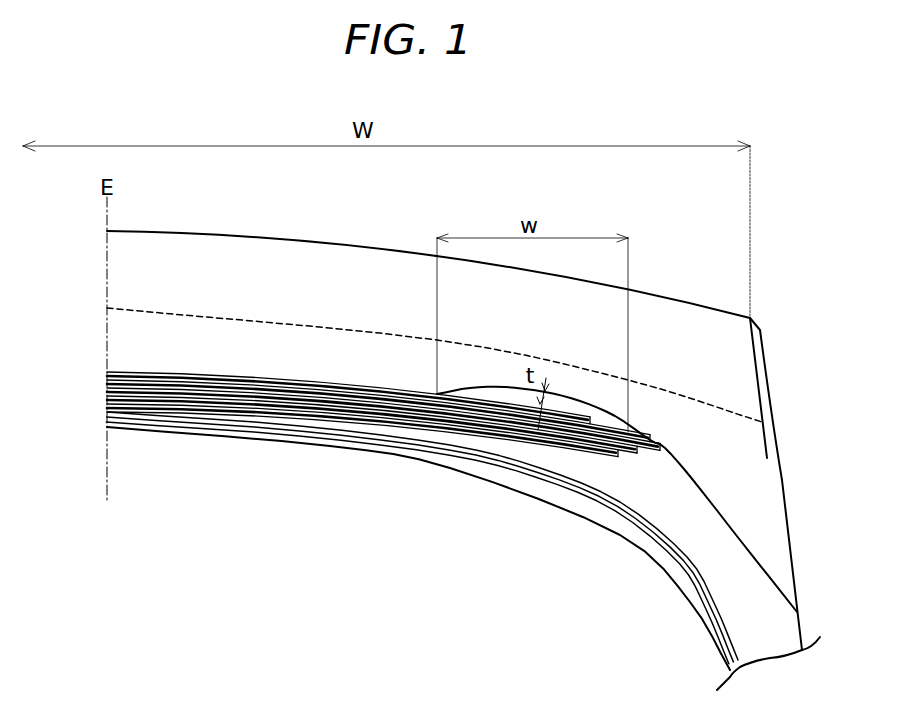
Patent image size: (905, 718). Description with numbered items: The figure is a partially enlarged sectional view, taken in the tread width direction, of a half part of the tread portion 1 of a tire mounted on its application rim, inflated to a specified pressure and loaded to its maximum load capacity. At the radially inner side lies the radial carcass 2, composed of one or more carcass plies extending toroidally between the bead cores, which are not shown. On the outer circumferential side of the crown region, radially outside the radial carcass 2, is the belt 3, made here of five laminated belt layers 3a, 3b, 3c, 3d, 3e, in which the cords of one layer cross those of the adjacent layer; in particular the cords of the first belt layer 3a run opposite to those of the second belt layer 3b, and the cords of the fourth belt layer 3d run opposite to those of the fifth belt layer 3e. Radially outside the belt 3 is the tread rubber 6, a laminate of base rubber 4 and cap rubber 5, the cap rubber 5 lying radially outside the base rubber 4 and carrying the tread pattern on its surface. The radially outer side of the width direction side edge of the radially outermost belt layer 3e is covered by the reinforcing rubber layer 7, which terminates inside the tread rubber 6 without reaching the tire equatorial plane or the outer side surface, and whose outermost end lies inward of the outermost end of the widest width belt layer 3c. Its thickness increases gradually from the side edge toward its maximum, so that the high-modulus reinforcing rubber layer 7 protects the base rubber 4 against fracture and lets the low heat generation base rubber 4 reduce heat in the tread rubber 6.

The tread portion 1 is at (343, 218).
The radial carcass 2 is at (450, 453).
The belt 3 is at (383, 452).
The first belt layer 3a is at (133, 490).
The second belt layer 3b is at (257, 400).
The widest width belt layer 3c is at (218, 392).
The fourth belt layer 3d is at (182, 382).
The radially outermost belt layer 3e is at (148, 375).
The base rubber 4 is at (295, 361).
The cap rubber 5 is at (295, 294).
The tread rubber 6 is at (244, 237).
The reinforcing rubber layer 7 is at (507, 395).